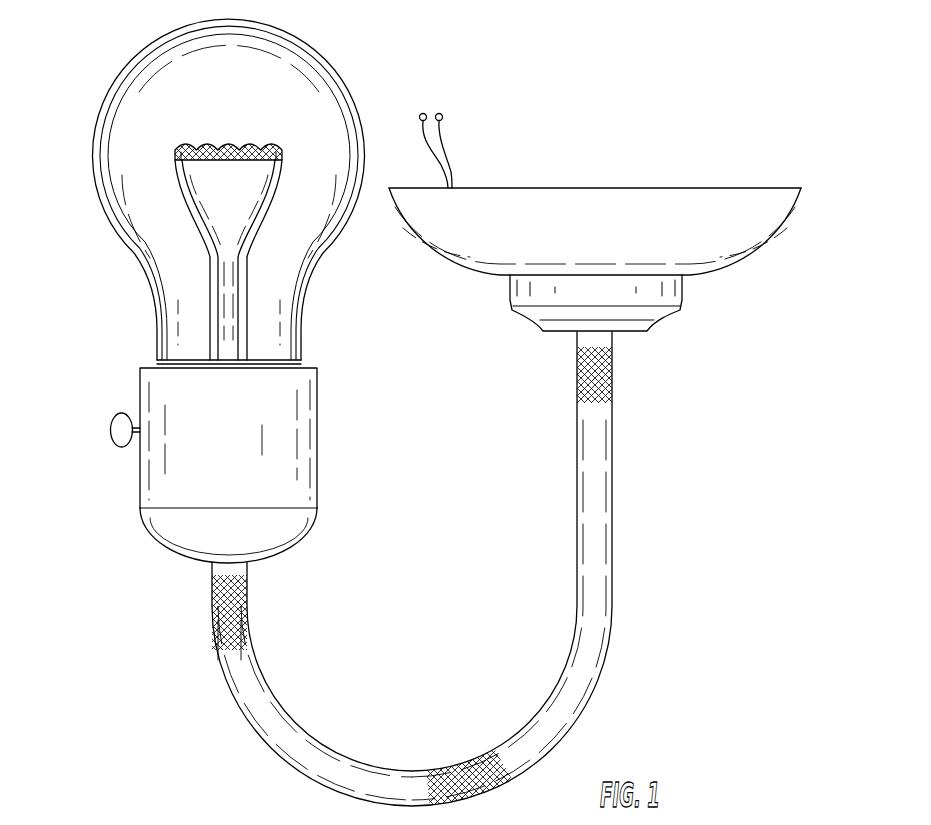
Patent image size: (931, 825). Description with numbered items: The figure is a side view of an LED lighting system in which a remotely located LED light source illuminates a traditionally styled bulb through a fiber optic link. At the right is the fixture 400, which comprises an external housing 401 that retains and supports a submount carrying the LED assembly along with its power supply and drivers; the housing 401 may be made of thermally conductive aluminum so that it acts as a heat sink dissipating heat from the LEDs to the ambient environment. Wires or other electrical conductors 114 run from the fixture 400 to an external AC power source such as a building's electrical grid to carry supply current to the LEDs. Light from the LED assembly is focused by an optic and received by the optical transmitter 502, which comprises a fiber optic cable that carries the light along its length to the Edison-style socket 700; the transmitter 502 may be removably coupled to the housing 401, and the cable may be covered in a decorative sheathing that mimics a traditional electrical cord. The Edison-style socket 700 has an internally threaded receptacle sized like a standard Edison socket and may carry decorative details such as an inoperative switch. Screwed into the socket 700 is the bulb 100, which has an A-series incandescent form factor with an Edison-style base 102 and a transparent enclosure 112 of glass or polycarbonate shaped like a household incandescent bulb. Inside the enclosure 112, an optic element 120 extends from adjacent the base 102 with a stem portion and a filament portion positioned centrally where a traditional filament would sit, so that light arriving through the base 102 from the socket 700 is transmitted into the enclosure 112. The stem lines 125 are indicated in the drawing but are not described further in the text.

The bulb 100 is at (249, 191).
The enclosure 112 is at (325, 245).
The optic element 120 is at (224, 134).
The lead wires / stem 125 is at (238, 348).
The base 102 is at (310, 362).
The Edison-style socket 700 is at (324, 484).
The optical transmitter 502 is at (619, 500).
The fixture 400 is at (597, 224).
The external housing 401 is at (700, 252).
The wires or other electrical conductors 114 is at (448, 163).